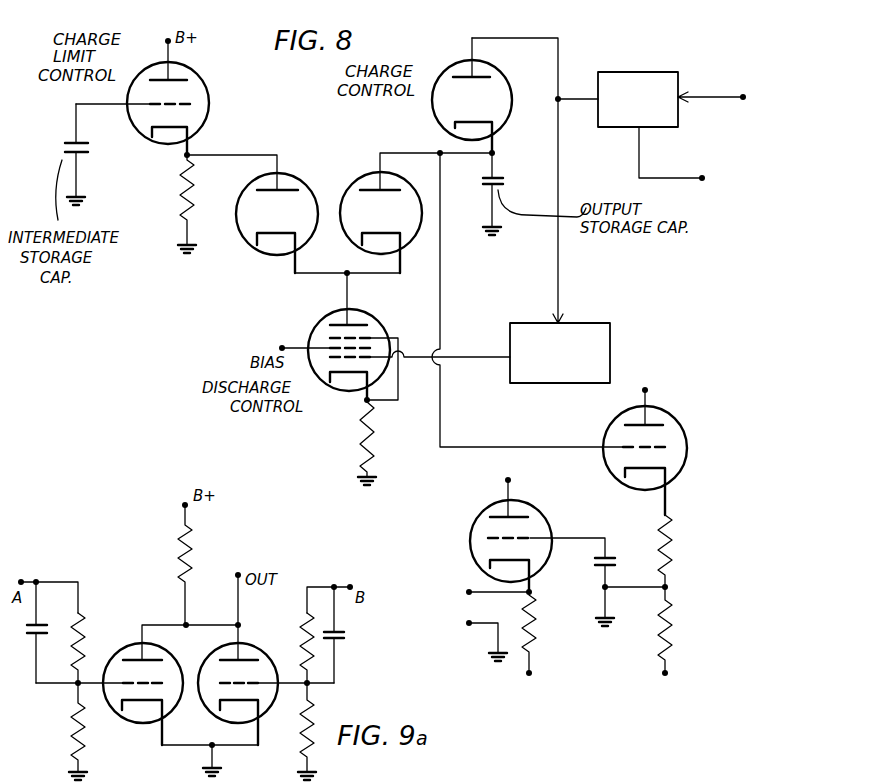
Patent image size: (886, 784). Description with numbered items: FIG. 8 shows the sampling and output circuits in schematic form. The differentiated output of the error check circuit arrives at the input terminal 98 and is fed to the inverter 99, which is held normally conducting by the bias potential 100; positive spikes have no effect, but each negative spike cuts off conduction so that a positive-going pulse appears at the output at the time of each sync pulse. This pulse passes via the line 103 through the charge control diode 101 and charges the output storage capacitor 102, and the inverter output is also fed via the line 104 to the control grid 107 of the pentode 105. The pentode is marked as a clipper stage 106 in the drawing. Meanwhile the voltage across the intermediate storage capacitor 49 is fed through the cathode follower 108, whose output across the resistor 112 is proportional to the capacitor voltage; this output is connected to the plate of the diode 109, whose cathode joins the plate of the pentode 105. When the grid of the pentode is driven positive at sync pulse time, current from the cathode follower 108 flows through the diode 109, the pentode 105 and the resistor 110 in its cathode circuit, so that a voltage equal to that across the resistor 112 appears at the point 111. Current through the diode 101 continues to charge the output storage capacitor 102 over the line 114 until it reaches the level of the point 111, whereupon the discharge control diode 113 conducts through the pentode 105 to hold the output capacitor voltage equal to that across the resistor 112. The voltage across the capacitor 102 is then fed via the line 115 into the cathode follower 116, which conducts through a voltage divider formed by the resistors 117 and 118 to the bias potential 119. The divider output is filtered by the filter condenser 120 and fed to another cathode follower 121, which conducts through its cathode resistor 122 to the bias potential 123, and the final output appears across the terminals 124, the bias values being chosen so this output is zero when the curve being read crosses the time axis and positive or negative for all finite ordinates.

The intermediate storage capacitor 49 is at (90, 148).
The input terminal 98 is at (743, 94).
The inverter 99 is at (618, 99).
The bias potential 100 is at (703, 176).
The charge control diode 101 is at (432, 117).
The output storage capacitor 102 is at (503, 181).
The line 103 is at (556, 38).
The line 104 is at (560, 256).
The pentode 105 is at (321, 318).
The clipper 106 is at (572, 380).
The control grid 107 is at (390, 358).
The cathode follower 108 is at (210, 116).
The diode 109 is at (307, 171).
The resistor 110 is at (362, 428).
The point 111 is at (348, 274).
The resistor 112 is at (184, 198).
The discharge control diode 113 is at (367, 174).
The line 114 is at (494, 161).
The line 115 is at (441, 280).
The cathode follower 116 is at (684, 434).
The resistor 117 is at (672, 533).
The resistor 118 is at (672, 628).
The bias potential 119 is at (666, 672).
The filter condenser 120 is at (595, 563).
The cathode follower 121 is at (543, 514).
The cathode resistor 122 is at (535, 612).
The bias potential 123 is at (531, 671).
The terminals 124 is at (470, 596).